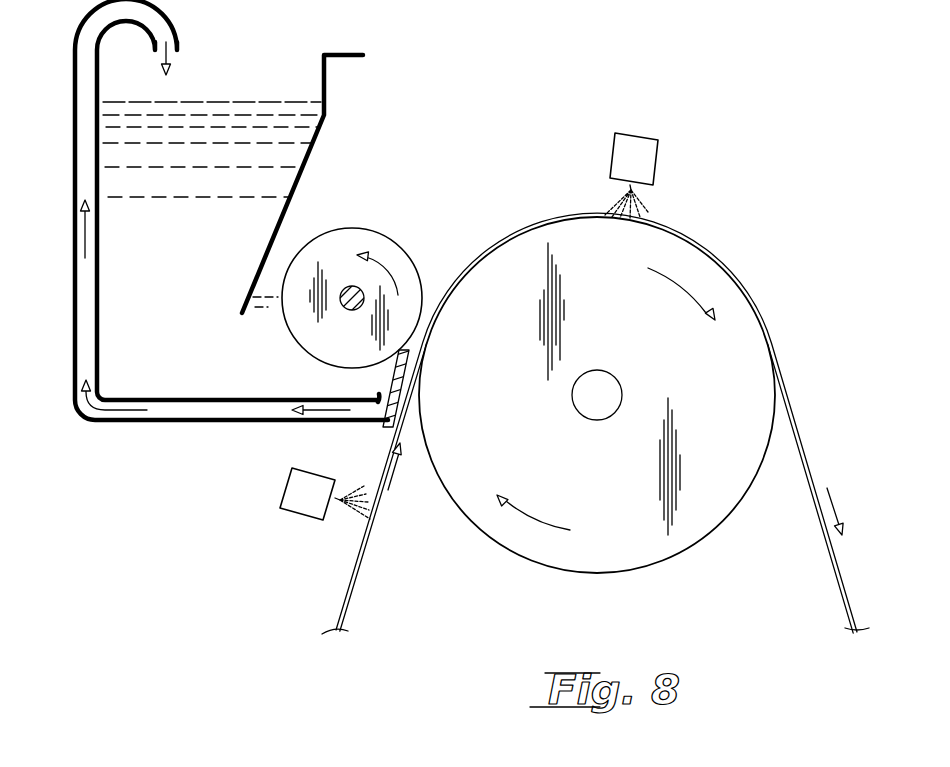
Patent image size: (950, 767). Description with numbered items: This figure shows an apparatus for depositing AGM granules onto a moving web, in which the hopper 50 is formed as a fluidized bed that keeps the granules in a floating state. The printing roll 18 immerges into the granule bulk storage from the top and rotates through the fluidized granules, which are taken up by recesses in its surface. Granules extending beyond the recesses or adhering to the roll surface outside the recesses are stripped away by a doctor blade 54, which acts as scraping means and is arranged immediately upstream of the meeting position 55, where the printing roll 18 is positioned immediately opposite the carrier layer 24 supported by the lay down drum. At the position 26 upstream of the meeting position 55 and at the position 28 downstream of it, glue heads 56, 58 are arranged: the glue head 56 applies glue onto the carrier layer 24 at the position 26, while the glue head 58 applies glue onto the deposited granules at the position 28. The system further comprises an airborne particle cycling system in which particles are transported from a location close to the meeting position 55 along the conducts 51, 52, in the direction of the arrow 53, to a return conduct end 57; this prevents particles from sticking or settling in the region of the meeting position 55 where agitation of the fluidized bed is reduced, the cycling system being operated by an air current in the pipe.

The printing roll 18 is at (347, 247).
The carrier layer 24 is at (350, 577).
The position upstream the meeting position 26 is at (334, 536).
The position downstream the meeting position 28 is at (666, 203).
The hopper 50 is at (313, 158).
The conduct 51 is at (180, 413).
The conduct 52 is at (82, 307).
The arrow 53 is at (97, 240).
The doctor blade 54 is at (396, 383).
The meeting position 55 is at (440, 336).
The glue head 56 is at (300, 491).
The return conduct end 57 is at (167, 42).
The glue head 58 is at (633, 150).